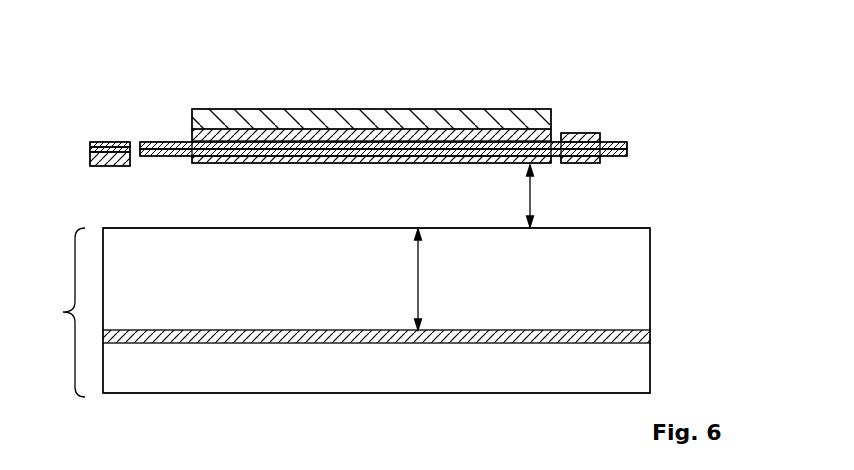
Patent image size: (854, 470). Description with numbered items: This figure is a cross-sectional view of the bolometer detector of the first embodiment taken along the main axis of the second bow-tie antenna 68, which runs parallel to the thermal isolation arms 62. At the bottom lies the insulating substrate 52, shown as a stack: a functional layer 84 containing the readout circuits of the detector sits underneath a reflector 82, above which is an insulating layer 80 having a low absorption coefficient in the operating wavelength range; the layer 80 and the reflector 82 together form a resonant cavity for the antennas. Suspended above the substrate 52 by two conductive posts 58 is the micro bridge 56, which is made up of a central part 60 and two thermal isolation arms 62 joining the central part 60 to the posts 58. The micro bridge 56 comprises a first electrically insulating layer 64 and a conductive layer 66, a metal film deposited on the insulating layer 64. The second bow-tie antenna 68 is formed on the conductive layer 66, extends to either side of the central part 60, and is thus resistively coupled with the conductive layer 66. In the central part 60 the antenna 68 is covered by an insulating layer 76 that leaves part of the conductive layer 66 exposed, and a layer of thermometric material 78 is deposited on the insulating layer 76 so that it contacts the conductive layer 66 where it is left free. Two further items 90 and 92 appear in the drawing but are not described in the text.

The insulating substrate 52 is at (340, 312).
The micro bridge 56 is at (440, 100).
The conductive posts 58 is at (585, 137).
The central part 60 is at (313, 82).
The thermal isolation arms 62 is at (100, 133).
The first electrically insulating layer 64 is at (90, 160).
The conductive layer 66 is at (415, 147).
The second bow-tie antenna 68 is at (157, 138).
The insulating layer 76 is at (523, 133).
The layer of thermometric material 78 is at (260, 115).
The insulating layer 80 is at (613, 277).
The reflector 82 is at (646, 339).
The functional layer 84 is at (630, 372).
The element 90 is at (222, 469).
The element 92 is at (342, 469).